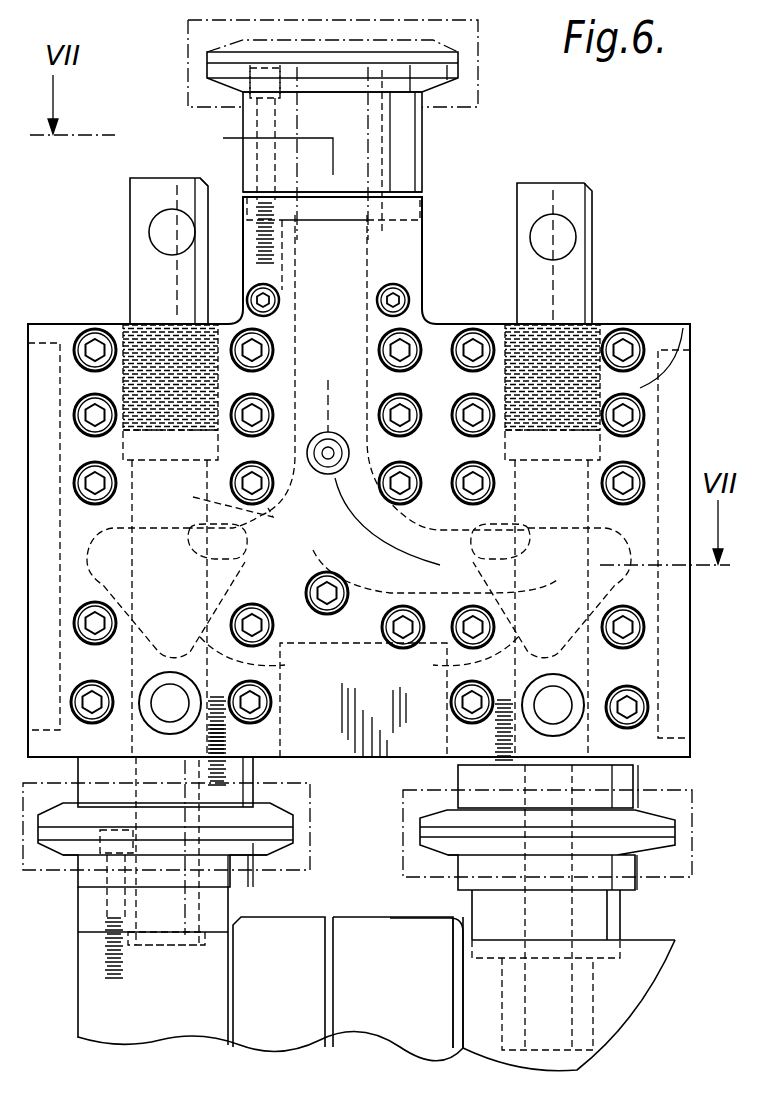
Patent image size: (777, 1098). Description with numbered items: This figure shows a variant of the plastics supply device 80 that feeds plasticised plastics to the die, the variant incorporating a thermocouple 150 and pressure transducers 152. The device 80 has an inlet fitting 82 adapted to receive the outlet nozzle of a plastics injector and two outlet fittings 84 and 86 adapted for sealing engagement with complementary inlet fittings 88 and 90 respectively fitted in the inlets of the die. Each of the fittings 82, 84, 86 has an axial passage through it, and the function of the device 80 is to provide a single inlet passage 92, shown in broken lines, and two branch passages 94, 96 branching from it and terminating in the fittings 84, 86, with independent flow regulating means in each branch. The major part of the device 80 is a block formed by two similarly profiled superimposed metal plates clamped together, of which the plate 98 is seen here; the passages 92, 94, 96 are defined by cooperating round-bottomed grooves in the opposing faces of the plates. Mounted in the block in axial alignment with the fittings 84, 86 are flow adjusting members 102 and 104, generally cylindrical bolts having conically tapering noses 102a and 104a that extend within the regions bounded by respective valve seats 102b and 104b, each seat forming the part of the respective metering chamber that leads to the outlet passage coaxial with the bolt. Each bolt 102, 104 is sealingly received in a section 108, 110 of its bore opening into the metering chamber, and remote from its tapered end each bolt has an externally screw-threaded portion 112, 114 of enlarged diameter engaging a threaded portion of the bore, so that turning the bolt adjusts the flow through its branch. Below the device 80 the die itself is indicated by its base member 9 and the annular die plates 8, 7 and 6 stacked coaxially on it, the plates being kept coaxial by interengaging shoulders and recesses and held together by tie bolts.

The annular die plate 6 is at (632, 962).
The annular die plate 7 is at (377, 940).
The annular die plate 8 is at (287, 940).
The base member 9 is at (100, 997).
The plastics supply device 80 is at (630, 297).
The inlet fitting 82 is at (458, 77).
The outlet fitting 84 is at (620, 788).
The outlet fitting 86 is at (240, 780).
The inlet fitting 88 is at (620, 880).
The inlet fitting 90 is at (267, 837).
The inlet passage 92 is at (300, 377).
The branch passage 94 is at (213, 499).
The branch passage 96 is at (427, 533).
The metal plate 98 is at (683, 328).
The flow adjusting member 102 is at (583, 213).
The conically tapering nose 102a is at (447, 675).
The valve seat 102b is at (580, 635).
The flow adjusting member 104 is at (142, 258).
The conically tapering nose 104a is at (145, 640).
The valve seat 104b is at (273, 662).
The bore section 108 is at (519, 550).
The bore section 110 is at (247, 557).
The externally screw-threaded portion 112 is at (540, 360).
The externally screw-threaded portion 114 is at (150, 360).
The thermocouple 150 is at (328, 474).
The pressure transducers 152 is at (173, 713).